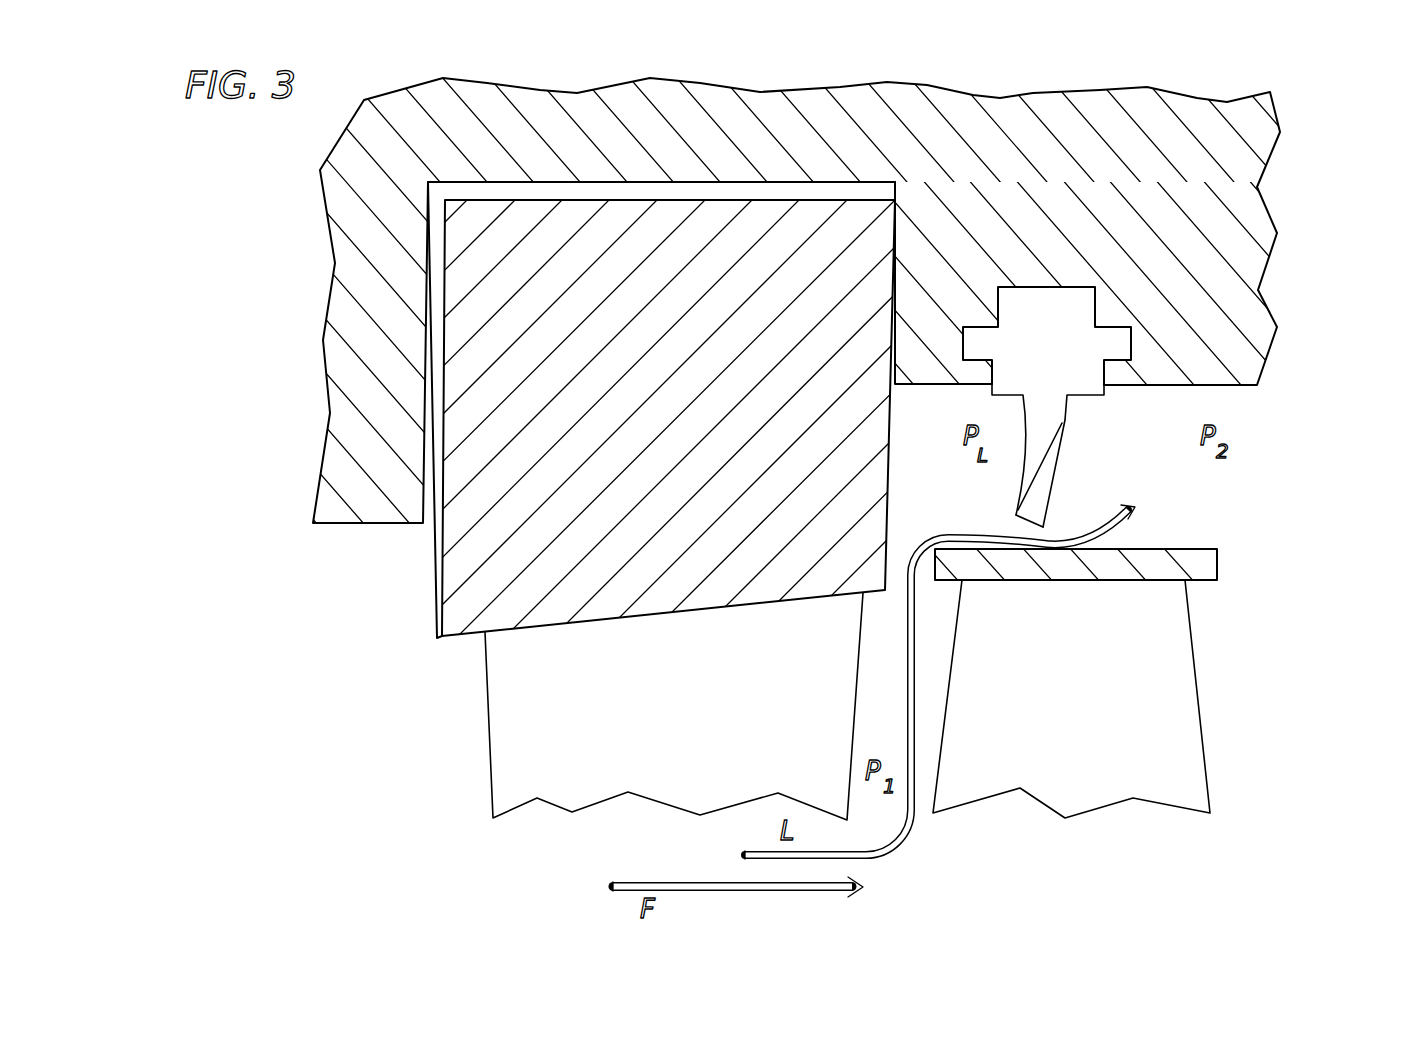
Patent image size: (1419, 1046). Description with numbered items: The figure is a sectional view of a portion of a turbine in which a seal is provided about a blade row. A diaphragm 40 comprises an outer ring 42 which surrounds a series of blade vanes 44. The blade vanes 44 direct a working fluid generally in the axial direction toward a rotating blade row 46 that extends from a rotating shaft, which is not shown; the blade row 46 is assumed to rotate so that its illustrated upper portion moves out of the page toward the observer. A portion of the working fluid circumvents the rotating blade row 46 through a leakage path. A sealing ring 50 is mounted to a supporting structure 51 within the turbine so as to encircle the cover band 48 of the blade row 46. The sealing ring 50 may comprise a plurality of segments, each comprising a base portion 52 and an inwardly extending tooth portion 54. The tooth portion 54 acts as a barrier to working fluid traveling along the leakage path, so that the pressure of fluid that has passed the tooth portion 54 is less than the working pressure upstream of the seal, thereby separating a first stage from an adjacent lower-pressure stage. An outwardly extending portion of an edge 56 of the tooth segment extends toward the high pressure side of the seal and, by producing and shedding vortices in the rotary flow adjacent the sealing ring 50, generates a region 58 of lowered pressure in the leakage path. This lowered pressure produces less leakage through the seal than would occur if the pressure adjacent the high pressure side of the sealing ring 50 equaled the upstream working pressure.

The diaphragm 40 is at (677, 525).
The outer ring 42 is at (457, 582).
The blade vanes 44 is at (537, 787).
The rotating blade row 46 is at (1163, 698).
The cover band 48 is at (1208, 567).
The sealing ring 50 is at (1085, 482).
The supporting structure 51 is at (1250, 223).
The base portion 52 is at (1077, 372).
The tooth portion 54 is at (1066, 455).
The edge 56 is at (1023, 488).
The region of lowered pressure 58 is at (970, 398).